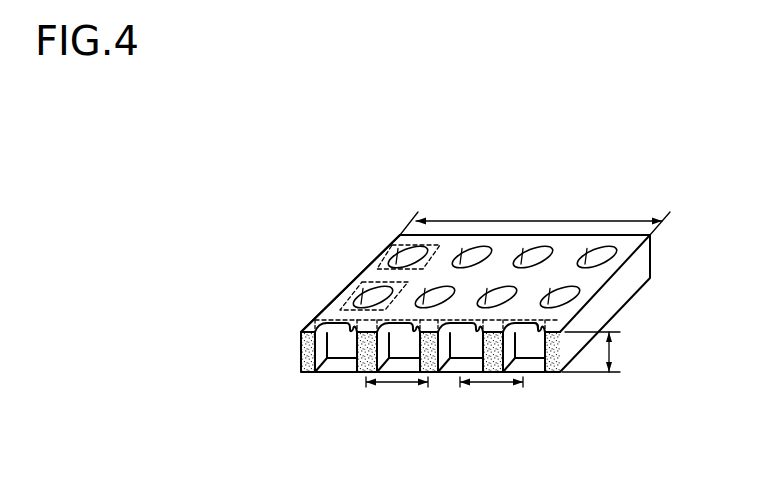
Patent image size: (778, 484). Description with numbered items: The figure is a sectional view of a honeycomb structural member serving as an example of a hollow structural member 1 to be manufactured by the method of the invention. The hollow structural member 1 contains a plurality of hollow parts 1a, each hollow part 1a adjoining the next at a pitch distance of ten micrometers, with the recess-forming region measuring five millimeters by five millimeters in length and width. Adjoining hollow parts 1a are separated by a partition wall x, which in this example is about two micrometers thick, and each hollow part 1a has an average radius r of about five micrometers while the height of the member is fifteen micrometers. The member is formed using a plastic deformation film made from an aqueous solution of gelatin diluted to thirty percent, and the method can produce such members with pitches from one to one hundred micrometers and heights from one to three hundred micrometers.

The hollow structural member 1 is at (373, 233).
The hollow part 1a is at (403, 330).
The partition wall x is at (485, 347).
The radius r is at (530, 326).